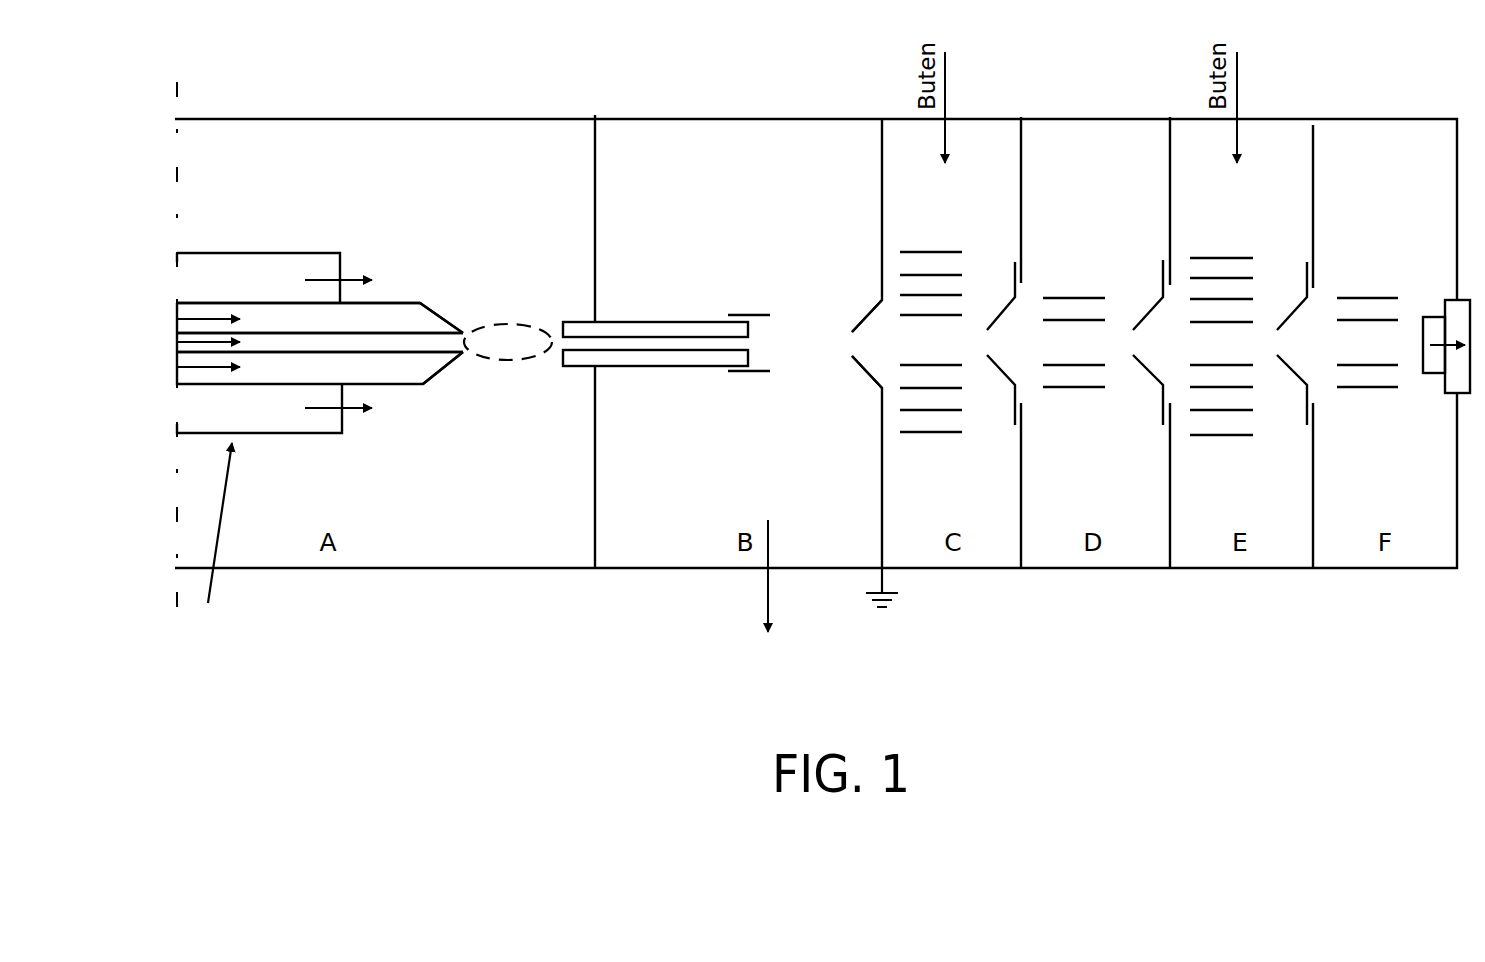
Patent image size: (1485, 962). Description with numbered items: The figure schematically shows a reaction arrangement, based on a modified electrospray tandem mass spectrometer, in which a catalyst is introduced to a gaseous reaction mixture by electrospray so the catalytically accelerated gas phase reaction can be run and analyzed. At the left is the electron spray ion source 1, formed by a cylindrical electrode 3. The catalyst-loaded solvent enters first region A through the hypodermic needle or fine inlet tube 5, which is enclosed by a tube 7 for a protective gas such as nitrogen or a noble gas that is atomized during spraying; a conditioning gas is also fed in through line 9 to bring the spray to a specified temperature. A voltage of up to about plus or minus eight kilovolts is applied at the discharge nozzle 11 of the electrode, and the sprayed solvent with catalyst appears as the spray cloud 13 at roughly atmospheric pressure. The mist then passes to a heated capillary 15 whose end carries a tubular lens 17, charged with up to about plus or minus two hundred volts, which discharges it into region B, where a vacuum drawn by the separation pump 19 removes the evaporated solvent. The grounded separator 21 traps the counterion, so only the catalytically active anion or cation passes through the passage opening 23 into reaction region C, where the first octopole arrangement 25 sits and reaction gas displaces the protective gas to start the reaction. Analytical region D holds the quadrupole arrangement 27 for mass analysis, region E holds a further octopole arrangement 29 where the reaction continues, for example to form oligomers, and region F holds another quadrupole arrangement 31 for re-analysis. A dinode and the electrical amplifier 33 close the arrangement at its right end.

The electron spray ion source 1 is at (215, 538).
The cylindrical electrode 3 is at (283, 433).
The inlet tube 5 is at (423, 345).
The intermediate tube 7 is at (303, 323).
The line 9 is at (207, 270).
The discharge nozzle 11 is at (463, 350).
The spray cloud 13 is at (507, 340).
The interface cones 15 is at (633, 330).
The tubular lens 17 is at (768, 338).
The separation pump 19 is at (768, 583).
The separator 21 is at (872, 583).
The passage opening 23 is at (853, 345).
The first octopole arrangement 25 is at (960, 252).
The ion lens 27 is at (1067, 298).
The octopole arrangement 29 is at (1227, 257).
The quadrupole arrangement 31 is at (1357, 298).
The electrical amplifier 33 is at (1433, 375).